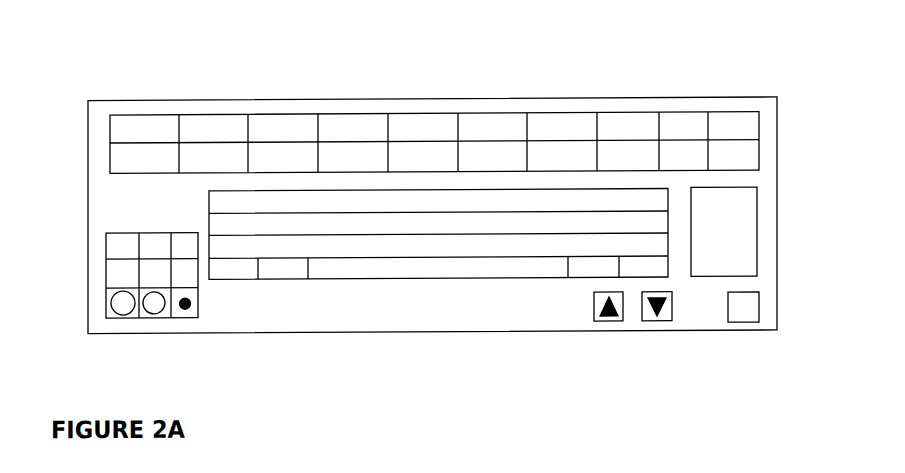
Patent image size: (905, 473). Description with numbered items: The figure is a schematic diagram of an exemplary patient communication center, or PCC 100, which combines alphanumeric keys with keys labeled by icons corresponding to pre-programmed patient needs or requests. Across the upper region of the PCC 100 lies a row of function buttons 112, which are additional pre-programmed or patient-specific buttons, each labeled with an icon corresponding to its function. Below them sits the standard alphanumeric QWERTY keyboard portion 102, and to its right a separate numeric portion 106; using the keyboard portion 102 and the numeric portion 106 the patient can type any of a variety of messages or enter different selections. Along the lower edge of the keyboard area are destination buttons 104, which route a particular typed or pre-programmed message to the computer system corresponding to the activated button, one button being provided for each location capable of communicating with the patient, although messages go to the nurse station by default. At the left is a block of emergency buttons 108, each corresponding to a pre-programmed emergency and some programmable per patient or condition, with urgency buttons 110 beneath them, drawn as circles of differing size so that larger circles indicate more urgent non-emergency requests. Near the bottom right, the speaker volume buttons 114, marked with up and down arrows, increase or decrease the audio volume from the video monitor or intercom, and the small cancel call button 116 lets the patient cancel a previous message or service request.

The patient communication center 100 is at (671, 75).
The keyboard portion 102 is at (438, 250).
The destination buttons 104 is at (280, 280).
The numeric portion 106 is at (730, 280).
The emergency buttons 108 is at (107, 271).
The urgency buttons 110 is at (128, 319).
The function buttons 112 is at (338, 130).
The speaker volume buttons 114 is at (657, 324).
The cancel call button 116 is at (748, 326).